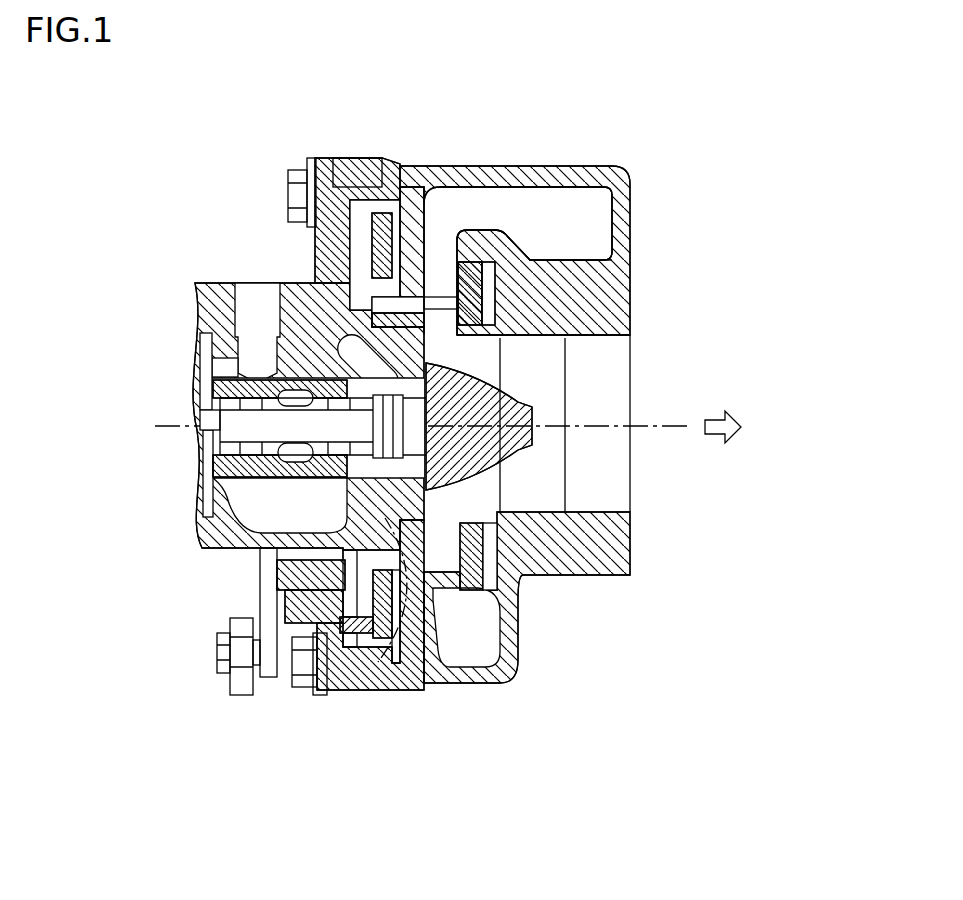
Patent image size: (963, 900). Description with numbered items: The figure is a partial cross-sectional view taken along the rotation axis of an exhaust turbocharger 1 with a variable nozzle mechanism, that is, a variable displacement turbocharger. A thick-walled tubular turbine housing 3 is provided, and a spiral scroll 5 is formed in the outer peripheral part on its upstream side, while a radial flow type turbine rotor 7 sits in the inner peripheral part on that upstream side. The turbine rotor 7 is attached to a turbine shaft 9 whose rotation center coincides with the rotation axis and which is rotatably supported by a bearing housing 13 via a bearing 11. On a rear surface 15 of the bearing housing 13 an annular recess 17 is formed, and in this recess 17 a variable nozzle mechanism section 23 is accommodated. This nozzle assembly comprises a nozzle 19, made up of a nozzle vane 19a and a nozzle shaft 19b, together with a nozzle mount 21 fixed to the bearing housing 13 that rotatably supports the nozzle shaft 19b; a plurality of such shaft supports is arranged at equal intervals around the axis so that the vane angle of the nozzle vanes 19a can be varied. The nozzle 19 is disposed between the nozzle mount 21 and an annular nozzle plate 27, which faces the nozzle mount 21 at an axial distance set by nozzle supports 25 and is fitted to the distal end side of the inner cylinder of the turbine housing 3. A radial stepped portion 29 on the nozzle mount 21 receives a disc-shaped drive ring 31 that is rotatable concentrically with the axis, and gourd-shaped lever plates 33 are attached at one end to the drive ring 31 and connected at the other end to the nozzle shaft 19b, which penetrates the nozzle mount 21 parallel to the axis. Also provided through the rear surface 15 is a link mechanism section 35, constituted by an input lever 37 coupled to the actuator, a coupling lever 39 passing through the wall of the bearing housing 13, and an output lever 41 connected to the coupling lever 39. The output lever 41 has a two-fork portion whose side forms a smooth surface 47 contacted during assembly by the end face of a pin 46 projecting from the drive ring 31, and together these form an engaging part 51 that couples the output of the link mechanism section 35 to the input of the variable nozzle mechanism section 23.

The exhaust turbocharger 1 is at (212, 128).
The turbine housing 3 is at (620, 216).
The scroll 5 is at (572, 205).
The turbine rotor 7 is at (490, 488).
The turbine shaft 9 is at (232, 440).
The bearing 11 is at (338, 448).
The bearing housing 13 is at (292, 308).
The rear surface 15 is at (316, 242).
The annular recess 17 is at (383, 212).
The nozzle 19 is at (446, 346).
The nozzle vane 19a is at (452, 301).
The nozzle shaft 19b is at (455, 263).
The nozzle mount 21 is at (414, 664).
The variable nozzle mechanism section 23 is at (443, 205).
The nozzle support 25 is at (443, 590).
The annular nozzle plate 27 is at (470, 305).
The stepped portion 29 is at (316, 262).
The drive ring 31 is at (412, 225).
The lever plate 33 is at (343, 228).
The link mechanism section 35 is at (258, 710).
The input lever 37 is at (258, 600).
The coupling lever 39 is at (285, 573).
The output lever 41 is at (366, 548).
The pin 46 is at (322, 570).
The smooth surface 47 is at (352, 643).
The engaging part 51 is at (378, 662).